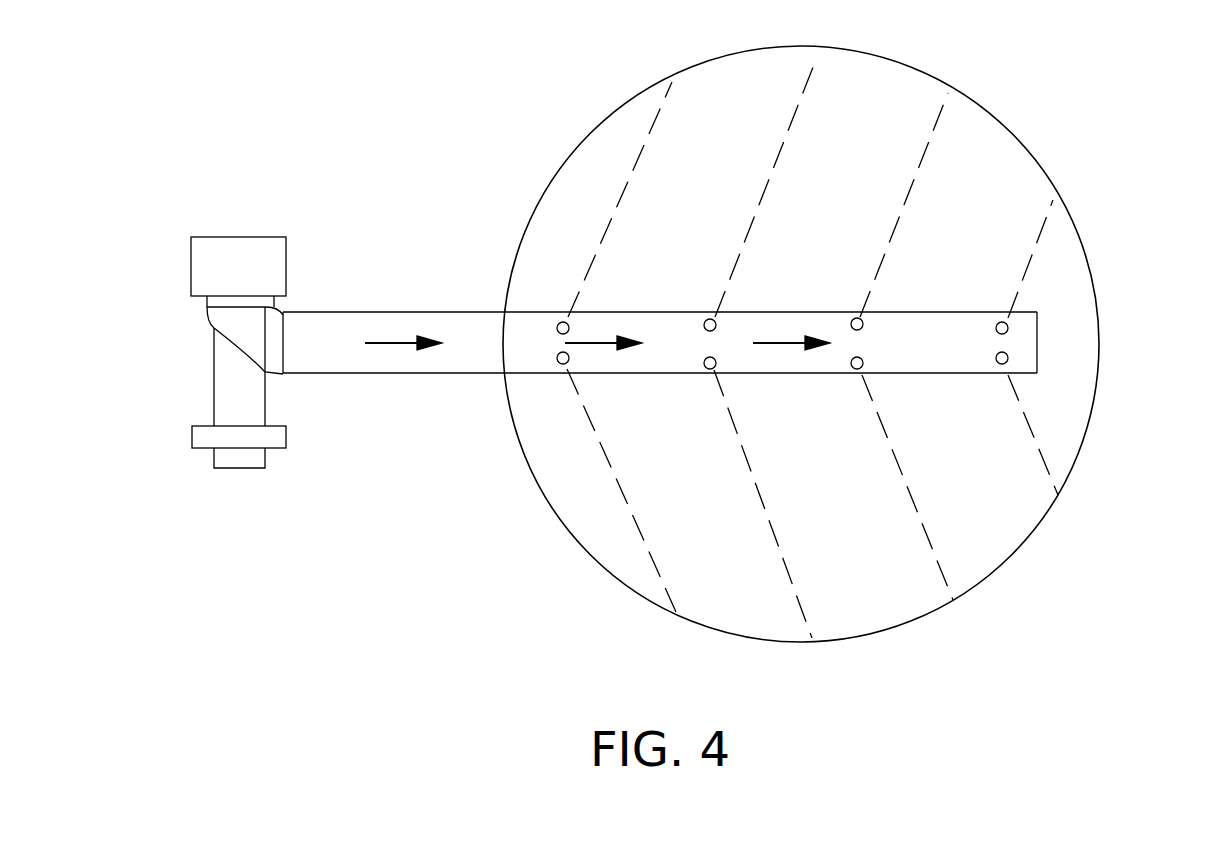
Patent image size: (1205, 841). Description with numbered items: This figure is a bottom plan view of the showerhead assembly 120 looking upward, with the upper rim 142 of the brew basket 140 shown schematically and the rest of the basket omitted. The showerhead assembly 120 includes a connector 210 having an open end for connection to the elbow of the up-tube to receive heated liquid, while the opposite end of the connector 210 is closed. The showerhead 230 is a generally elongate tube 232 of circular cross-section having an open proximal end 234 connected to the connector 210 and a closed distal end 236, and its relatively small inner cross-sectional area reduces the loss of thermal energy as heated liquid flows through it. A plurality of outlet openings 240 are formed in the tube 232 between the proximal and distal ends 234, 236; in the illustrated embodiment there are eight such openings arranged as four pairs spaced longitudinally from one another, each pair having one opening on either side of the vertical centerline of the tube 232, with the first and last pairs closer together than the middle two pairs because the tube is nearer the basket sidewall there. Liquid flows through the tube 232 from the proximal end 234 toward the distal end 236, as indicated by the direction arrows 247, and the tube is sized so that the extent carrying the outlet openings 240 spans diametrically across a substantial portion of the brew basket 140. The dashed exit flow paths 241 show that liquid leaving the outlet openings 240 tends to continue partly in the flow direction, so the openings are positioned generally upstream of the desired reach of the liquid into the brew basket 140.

The showerhead assembly 120 is at (165, 151).
The brew basket 140 is at (992, 115).
The upper rim 142 is at (885, 58).
The connector 210 is at (225, 395).
The showerhead 230 is at (425, 312).
The tube 232 is at (430, 375).
The proximal end 234 is at (293, 374).
The distal end 236 is at (1037, 358).
The outlet openings 240 is at (700, 323).
The exit flow paths 241 is at (623, 497).
The flow direction 247 is at (605, 343).